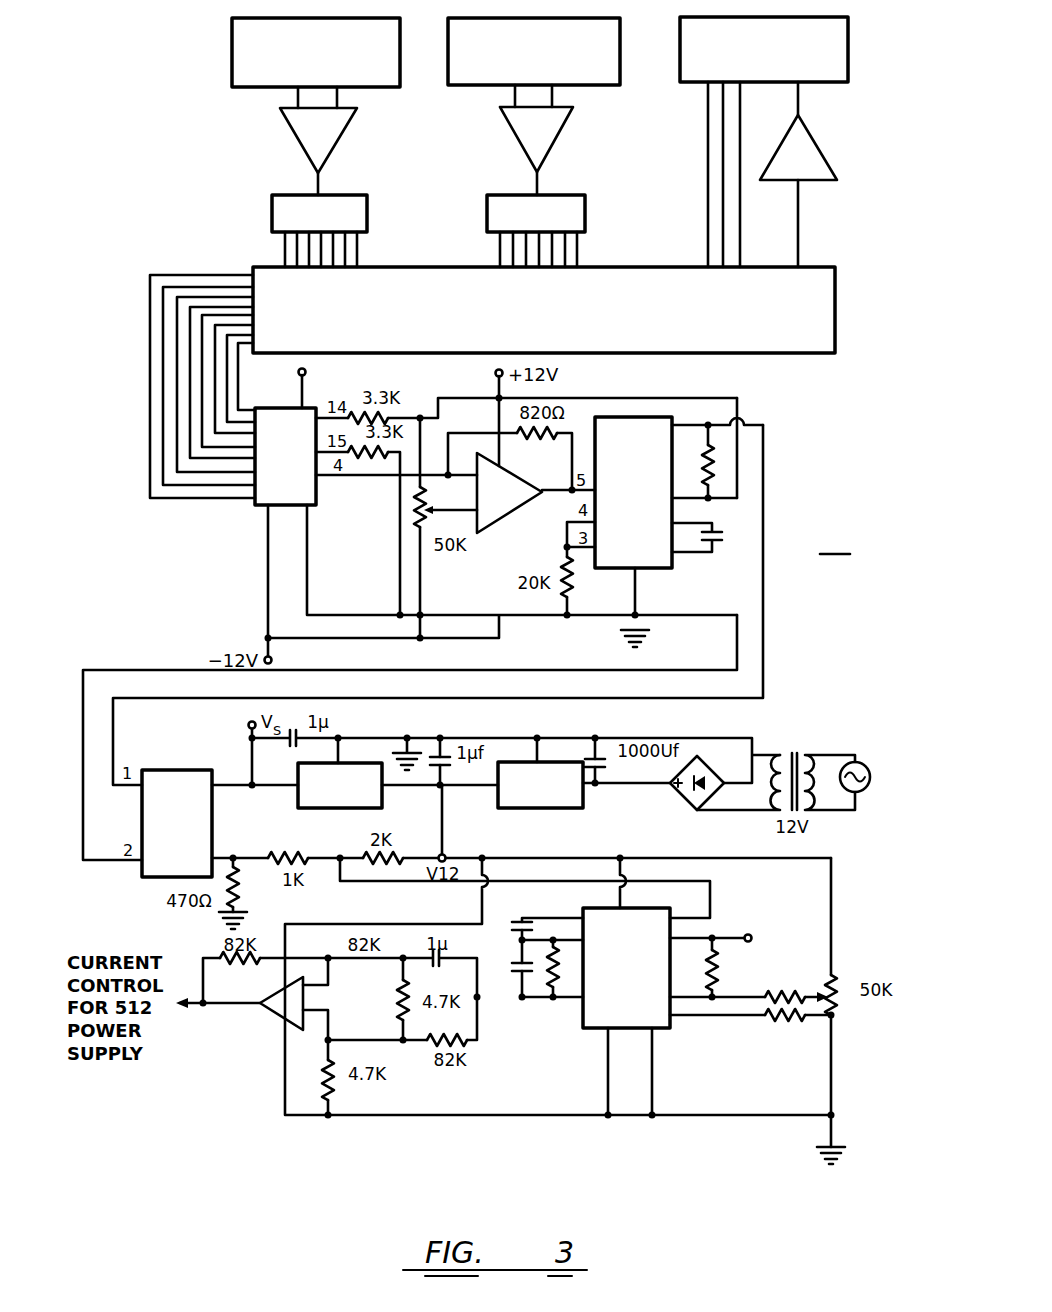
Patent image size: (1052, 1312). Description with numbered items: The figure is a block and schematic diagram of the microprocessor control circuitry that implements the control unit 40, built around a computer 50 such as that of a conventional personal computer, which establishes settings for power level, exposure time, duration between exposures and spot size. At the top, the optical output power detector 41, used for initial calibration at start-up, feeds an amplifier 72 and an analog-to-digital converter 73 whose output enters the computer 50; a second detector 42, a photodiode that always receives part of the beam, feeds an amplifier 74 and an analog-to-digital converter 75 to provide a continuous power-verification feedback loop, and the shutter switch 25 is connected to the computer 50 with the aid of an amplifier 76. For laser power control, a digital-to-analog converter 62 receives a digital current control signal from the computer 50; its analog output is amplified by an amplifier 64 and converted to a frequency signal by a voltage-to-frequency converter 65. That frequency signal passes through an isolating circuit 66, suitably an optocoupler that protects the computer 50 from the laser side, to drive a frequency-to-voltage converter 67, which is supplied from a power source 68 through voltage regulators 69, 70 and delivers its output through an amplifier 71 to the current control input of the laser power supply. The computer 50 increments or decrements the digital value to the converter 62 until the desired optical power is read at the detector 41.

The optical output power detector 41 is at (232, 44).
The second detector 42 is at (620, 42).
The shutter switch 25 is at (848, 40).
The amplifier 72 is at (304, 150).
The amplifier 74 is at (555, 146).
The amplifier 76 is at (820, 148).
The analog-to-digital converter 73 is at (272, 215).
The analog-to-digital converter 75 is at (585, 214).
The computer 50 is at (822, 267).
The digital-to-analog converter 62 is at (293, 406).
The amplifier 64 is at (528, 512).
The voltage-to-frequency converter 65 is at (663, 568).
The control unit 40 is at (835, 543).
The isolating circuit 66 is at (178, 770).
The voltage regulator 69 is at (298, 809).
The voltage regulator 70 is at (573, 808).
The power source 68 is at (687, 800).
The frequency-to-voltage converter 67 is at (603, 908).
The amplifier 71 is at (268, 1012).